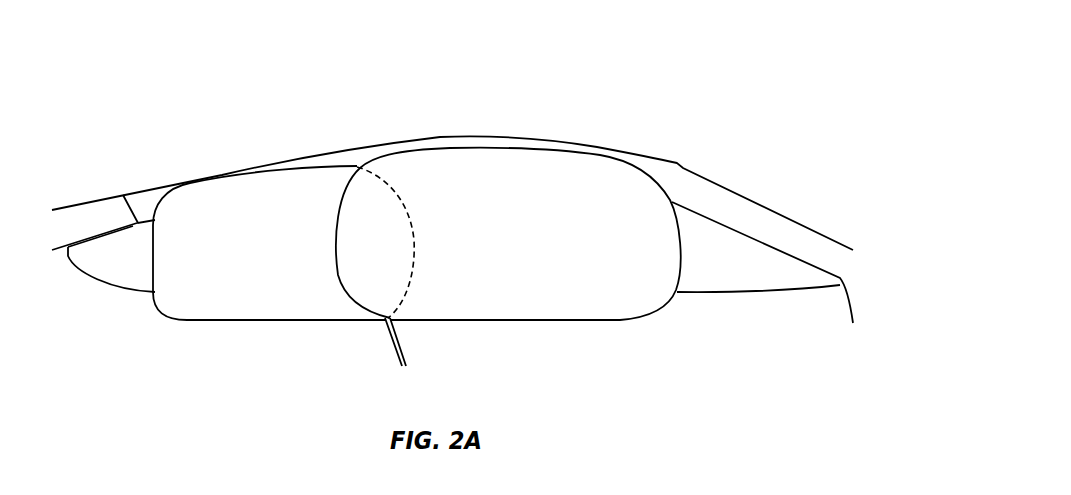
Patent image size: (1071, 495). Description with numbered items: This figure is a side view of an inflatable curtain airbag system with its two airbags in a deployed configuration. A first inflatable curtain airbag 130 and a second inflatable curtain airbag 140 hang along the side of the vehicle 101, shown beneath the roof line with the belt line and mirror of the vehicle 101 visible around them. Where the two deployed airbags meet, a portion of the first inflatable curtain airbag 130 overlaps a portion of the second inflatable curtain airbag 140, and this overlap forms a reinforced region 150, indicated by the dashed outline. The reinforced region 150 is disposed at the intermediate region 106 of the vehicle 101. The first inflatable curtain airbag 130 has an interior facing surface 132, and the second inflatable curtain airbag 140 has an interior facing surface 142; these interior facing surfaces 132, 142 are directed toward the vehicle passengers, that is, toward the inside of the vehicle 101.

The vehicle 101 is at (452, 176).
The intermediate region 106 is at (355, 124).
The first inflatable curtain airbag 130 is at (508, 208).
The interior facing surface 132 is at (518, 273).
The second inflatable curtain airbag 140 is at (269, 235).
The interior facing surface 142 is at (237, 276).
The reinforced region 150 is at (383, 228).